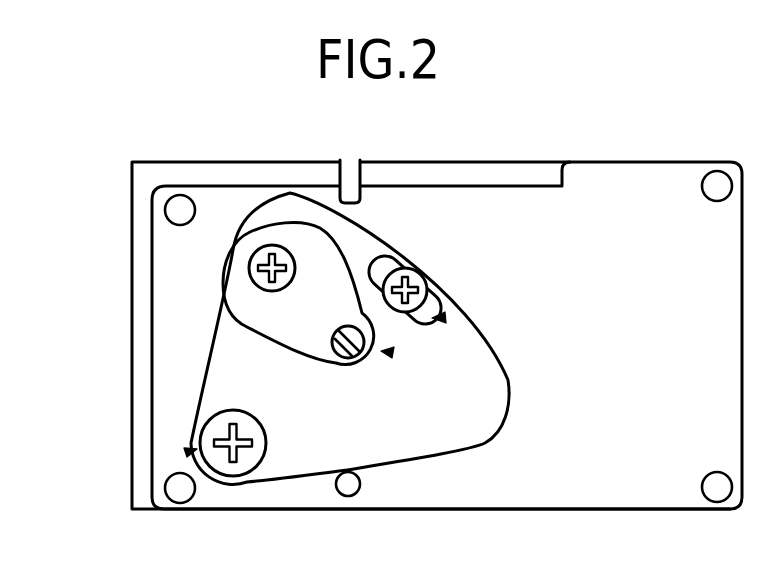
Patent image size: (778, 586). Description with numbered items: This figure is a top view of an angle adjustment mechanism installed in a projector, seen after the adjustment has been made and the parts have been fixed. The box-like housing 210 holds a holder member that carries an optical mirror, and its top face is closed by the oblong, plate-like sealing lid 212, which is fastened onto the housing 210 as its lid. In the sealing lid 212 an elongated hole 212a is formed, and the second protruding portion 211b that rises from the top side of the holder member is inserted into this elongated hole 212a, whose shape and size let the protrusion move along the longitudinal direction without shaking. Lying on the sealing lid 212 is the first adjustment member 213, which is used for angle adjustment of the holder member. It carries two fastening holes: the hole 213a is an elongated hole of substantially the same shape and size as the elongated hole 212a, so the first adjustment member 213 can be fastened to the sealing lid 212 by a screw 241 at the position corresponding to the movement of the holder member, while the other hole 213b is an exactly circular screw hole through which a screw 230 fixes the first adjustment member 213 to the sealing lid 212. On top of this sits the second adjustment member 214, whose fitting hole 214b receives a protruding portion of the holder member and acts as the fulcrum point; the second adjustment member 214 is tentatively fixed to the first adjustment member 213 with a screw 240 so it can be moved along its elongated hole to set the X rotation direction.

The housing 210 is at (143, 351).
The second protruding portion 211b is at (349, 325).
The sealing lid 212 is at (147, 316).
The elongated hole 212a is at (390, 352).
The first adjustment member 213 is at (228, 338).
The hole for fastening 213a is at (440, 317).
The other hole for fastening 213b is at (190, 452).
The second adjustment member 214 is at (250, 295).
The fitting hole 214b is at (341, 346).
The screw 230 is at (217, 435).
The screw 240 is at (260, 250).
The screw 241 is at (412, 272).